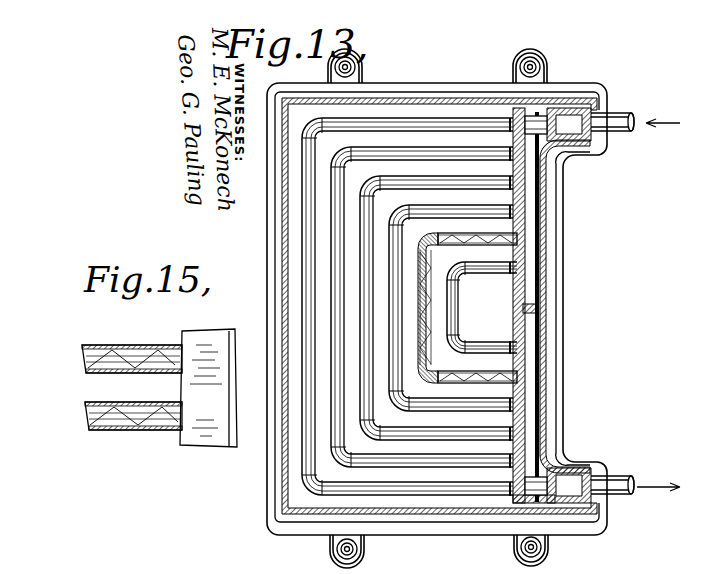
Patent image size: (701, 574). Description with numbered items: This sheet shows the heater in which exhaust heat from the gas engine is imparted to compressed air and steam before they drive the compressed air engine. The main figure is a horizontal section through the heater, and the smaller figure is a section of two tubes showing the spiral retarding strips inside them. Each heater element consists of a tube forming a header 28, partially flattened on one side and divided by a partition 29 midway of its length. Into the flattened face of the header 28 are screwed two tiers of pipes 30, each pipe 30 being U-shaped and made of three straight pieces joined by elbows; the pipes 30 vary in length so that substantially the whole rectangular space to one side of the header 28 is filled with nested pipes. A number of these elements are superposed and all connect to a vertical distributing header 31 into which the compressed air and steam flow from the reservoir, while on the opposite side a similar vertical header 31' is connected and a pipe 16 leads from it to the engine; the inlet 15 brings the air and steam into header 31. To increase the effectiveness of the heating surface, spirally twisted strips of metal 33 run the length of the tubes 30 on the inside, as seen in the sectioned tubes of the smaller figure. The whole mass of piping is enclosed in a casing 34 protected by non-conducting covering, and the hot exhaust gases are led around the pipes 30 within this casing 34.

In FIG. 13, the inlet pipe 15 is at (607, 121).
In FIG. 13, the pipe 16 is at (621, 475).
In FIG. 13, the tube 28 is at (535, 268).
In FIG. 15, the tube 28 is at (232, 404).
In FIG. 13, the partition 29 is at (534, 310).
In FIG. 13, the pipes 30 is at (490, 275).
In FIG. 15, the pipes 30 is at (110, 375).
In FIG. 13, the vertical distributing header 31 is at (581, 139).
In FIG. 13, the vertical header 31' is at (588, 464).
In FIG. 15, the spirally twisted strips of metal 33 is at (123, 417).
In FIG. 13, the casing 34 is at (403, 103).